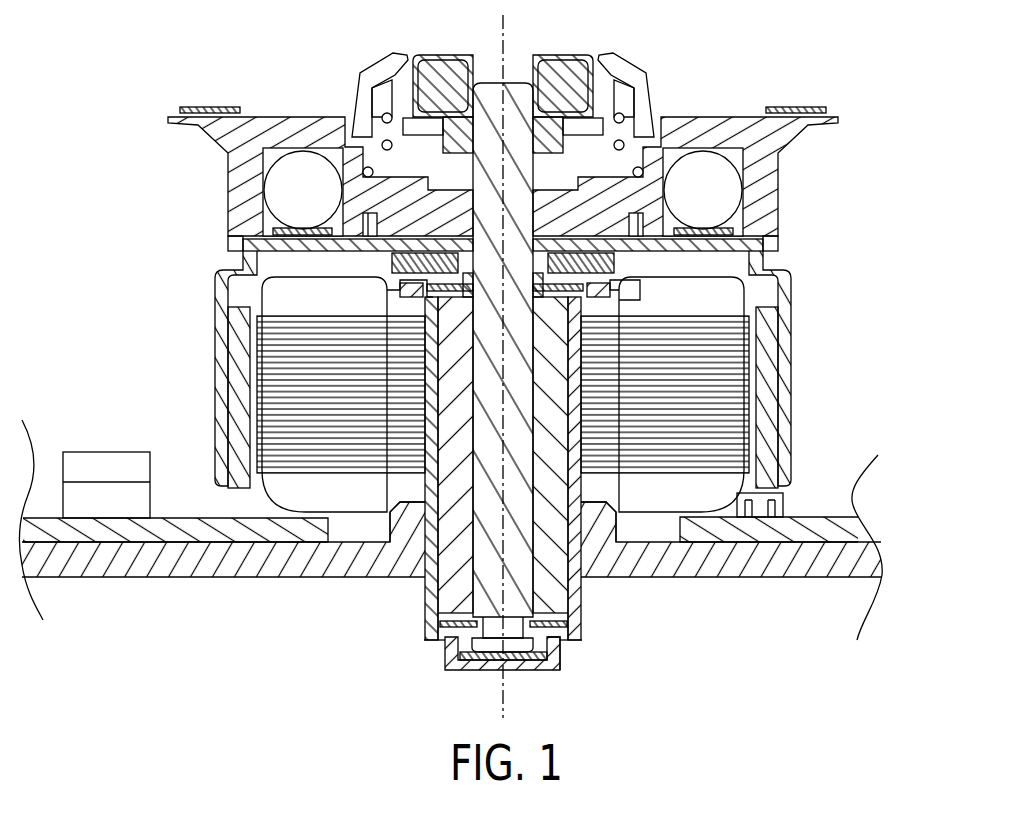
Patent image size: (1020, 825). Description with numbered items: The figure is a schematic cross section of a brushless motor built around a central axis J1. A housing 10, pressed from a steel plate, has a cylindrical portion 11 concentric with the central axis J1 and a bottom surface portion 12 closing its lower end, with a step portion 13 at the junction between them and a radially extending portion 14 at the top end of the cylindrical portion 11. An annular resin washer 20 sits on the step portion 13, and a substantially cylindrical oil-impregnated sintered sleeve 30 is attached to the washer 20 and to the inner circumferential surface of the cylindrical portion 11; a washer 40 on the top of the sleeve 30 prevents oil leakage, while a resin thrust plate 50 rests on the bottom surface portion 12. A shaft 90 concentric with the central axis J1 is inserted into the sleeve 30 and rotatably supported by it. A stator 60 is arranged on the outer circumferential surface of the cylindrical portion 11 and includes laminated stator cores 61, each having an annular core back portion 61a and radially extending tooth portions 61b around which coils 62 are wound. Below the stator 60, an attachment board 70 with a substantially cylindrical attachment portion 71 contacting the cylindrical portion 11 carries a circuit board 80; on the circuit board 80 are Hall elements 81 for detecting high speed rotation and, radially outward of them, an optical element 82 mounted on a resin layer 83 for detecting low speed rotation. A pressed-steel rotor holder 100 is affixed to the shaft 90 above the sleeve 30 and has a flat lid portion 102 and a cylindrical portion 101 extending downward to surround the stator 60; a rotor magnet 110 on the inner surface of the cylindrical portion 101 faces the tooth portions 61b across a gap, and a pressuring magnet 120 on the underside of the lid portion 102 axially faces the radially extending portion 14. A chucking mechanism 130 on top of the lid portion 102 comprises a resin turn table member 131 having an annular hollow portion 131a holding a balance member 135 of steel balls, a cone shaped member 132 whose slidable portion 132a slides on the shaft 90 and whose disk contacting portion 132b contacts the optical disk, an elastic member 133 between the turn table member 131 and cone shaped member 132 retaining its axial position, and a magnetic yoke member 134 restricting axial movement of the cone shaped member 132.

The housing 10 is at (522, 508).
The cylindrical portion 11 is at (597, 520).
The bottom surface portion 12 is at (508, 667).
The step portion 13 is at (560, 643).
The radially extending portion 14 is at (598, 292).
The washer 20 is at (467, 637).
The sleeve 30 is at (455, 577).
The washer 40 is at (752, 256).
The thrust plate 50 is at (483, 657).
The stator 60 is at (451, 598).
The stator core 61 is at (427, 395).
The core back portion 61a is at (410, 503).
The tooth portion 61b is at (313, 390).
The coil 62 is at (303, 498).
The attachment board 70 is at (212, 592).
The attachment portion 71 is at (593, 507).
The circuit board 80 is at (769, 553).
The Hall element 81 is at (787, 502).
The optical element 82 is at (98, 522).
The resin layer 83 is at (115, 515).
The shaft 90 is at (493, 100).
The rotor holder 100 is at (442, 345).
The cylindrical portion 101 is at (783, 340).
The lid portion 102 is at (247, 249).
The rotor magnet 110 is at (765, 392).
The pressuring magnet 120 is at (222, 298).
The chucking mechanism 130 is at (455, 133).
The turn table member 131 is at (233, 140).
The hollow portion 131a is at (222, 238).
The cone shaped member 132 is at (581, 80).
The slidable portion 132a is at (525, 58).
The disk contacting portion 132b is at (637, 80).
The elastic member 133 is at (383, 142).
The yoke member 134 is at (383, 115).
The balance member 135 is at (710, 192).
The central axis J1 is at (505, 25).